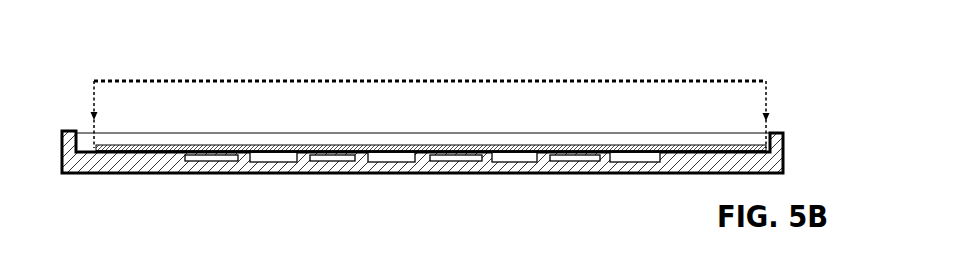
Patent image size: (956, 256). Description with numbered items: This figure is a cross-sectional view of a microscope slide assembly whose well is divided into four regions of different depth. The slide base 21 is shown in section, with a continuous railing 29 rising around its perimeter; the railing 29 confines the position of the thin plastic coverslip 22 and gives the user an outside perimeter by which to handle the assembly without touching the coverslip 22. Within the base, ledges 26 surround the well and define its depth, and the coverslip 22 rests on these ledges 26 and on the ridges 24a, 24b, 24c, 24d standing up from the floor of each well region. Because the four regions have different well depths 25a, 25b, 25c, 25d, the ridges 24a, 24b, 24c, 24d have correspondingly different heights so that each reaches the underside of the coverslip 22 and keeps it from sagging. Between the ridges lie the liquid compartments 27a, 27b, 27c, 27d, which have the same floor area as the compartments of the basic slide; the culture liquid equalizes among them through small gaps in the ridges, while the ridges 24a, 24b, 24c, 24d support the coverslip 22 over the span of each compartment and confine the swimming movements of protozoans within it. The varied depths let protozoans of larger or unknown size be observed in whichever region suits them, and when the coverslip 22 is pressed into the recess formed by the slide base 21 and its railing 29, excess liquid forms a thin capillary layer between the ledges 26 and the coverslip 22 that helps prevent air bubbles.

The slide base 21 is at (131, 174).
The coverslip 22 is at (252, 80).
The ridges 24a is at (245, 162).
The ridges 24b is at (363, 162).
The ridges 24c is at (485, 162).
The ridges 24d is at (605, 162).
The well depth 25a is at (187, 158).
The well depth 25b is at (317, 158).
The well depth 25c is at (431, 158).
The well depth 25d is at (552, 158).
The ledges 26 is at (149, 147).
The liquid compartments 27a is at (277, 157).
The liquid compartments 27b is at (385, 157).
The liquid compartments 27c is at (508, 157).
The liquid compartments 27d is at (636, 158).
The railing 29 is at (591, 133).